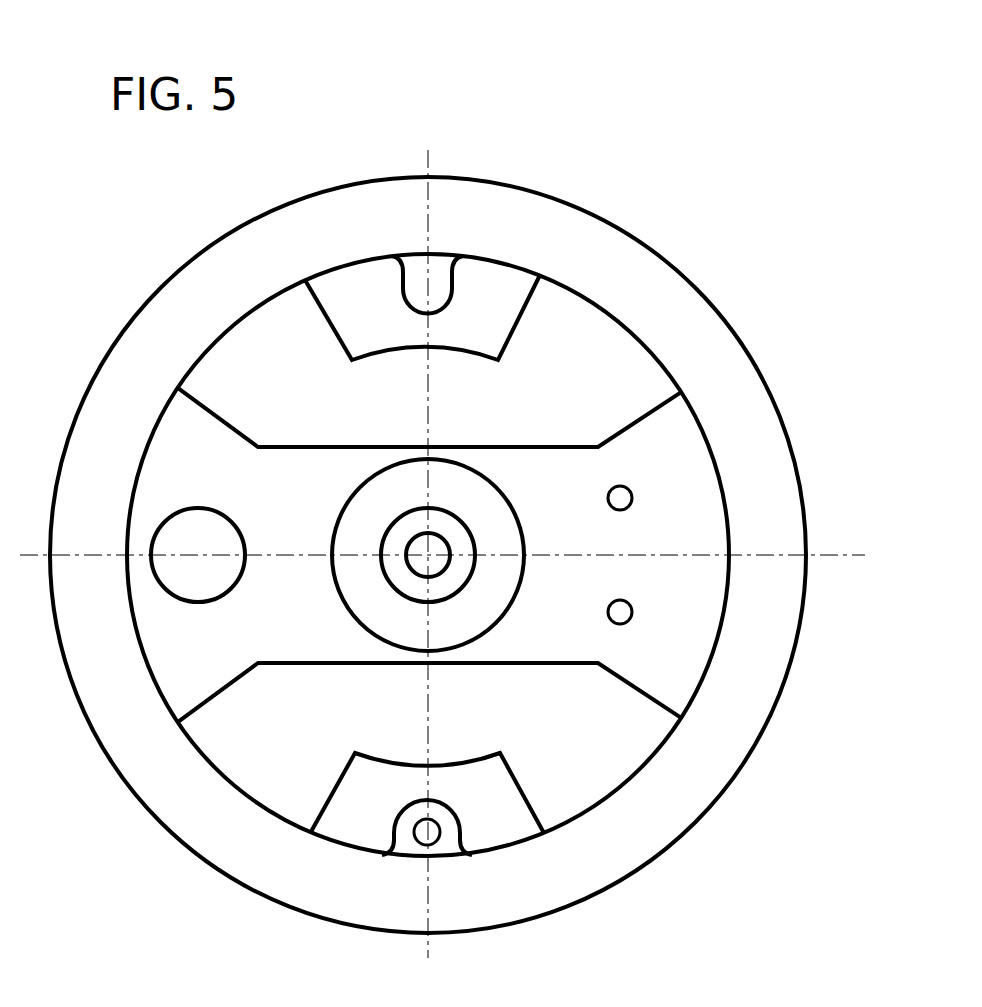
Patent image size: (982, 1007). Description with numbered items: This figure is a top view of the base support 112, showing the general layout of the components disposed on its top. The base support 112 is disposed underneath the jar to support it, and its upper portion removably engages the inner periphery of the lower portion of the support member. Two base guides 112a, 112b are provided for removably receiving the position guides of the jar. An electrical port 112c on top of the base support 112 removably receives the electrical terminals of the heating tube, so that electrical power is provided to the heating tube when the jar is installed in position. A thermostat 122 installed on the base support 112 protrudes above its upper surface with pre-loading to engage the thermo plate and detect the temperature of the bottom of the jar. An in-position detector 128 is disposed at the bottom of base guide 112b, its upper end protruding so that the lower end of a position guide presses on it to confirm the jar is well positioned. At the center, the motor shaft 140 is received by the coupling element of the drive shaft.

The base support 112 is at (782, 587).
The base guide 112a is at (436, 268).
The base guide 112b is at (404, 832).
The electrical port 112c is at (628, 622).
The thermostat 122 is at (168, 550).
The in-position detector 128 is at (433, 840).
The motor shaft 140 is at (437, 548).